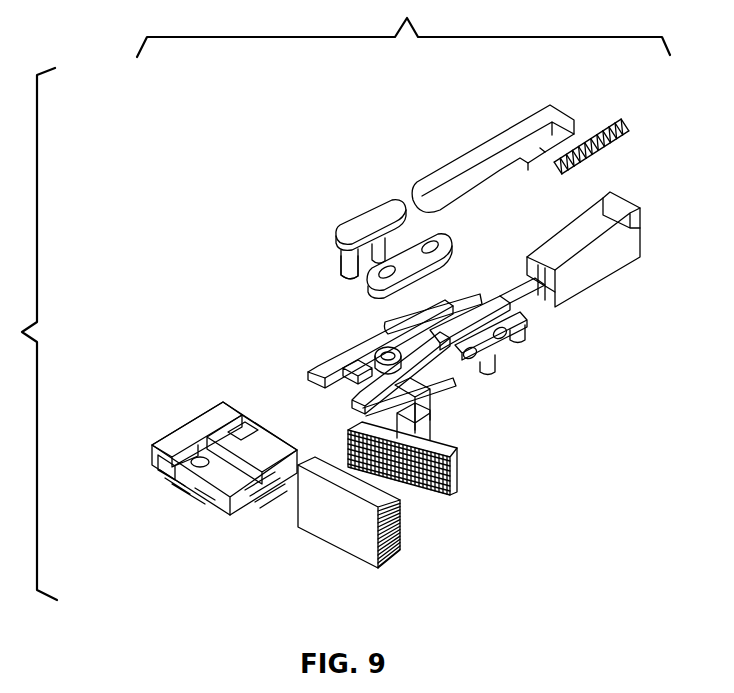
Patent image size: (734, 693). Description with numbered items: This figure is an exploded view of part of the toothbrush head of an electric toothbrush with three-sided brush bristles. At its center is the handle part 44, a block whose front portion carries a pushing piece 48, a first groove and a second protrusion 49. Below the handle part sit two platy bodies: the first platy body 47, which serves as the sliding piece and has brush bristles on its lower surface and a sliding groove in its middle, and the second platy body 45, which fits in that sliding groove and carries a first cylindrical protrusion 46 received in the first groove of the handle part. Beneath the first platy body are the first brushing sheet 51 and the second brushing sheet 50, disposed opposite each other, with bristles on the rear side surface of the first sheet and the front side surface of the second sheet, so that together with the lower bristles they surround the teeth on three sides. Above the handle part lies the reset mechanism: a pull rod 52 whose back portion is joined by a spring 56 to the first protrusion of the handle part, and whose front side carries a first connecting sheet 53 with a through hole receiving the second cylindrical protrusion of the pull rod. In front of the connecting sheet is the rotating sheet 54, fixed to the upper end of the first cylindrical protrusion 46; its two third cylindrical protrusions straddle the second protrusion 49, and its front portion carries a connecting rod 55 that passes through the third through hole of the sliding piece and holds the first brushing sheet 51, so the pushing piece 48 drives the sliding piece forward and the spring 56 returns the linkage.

The handle part 44 is at (573, 277).
The second platy body 45 is at (325, 368).
The first cylindrical protrusion 46 is at (365, 341).
The first platy body 47 is at (150, 443).
The pushing piece 48 is at (467, 343).
The second protrusion 49 is at (390, 382).
The second brushing sheet 50 is at (457, 477).
The first brushing sheet 51 is at (343, 528).
The pull rod 52 is at (469, 160).
The first connecting sheet 53 is at (405, 253).
The rotating sheet 54 is at (350, 228).
The connecting rod 55 is at (340, 263).
The spring 56 is at (615, 121).